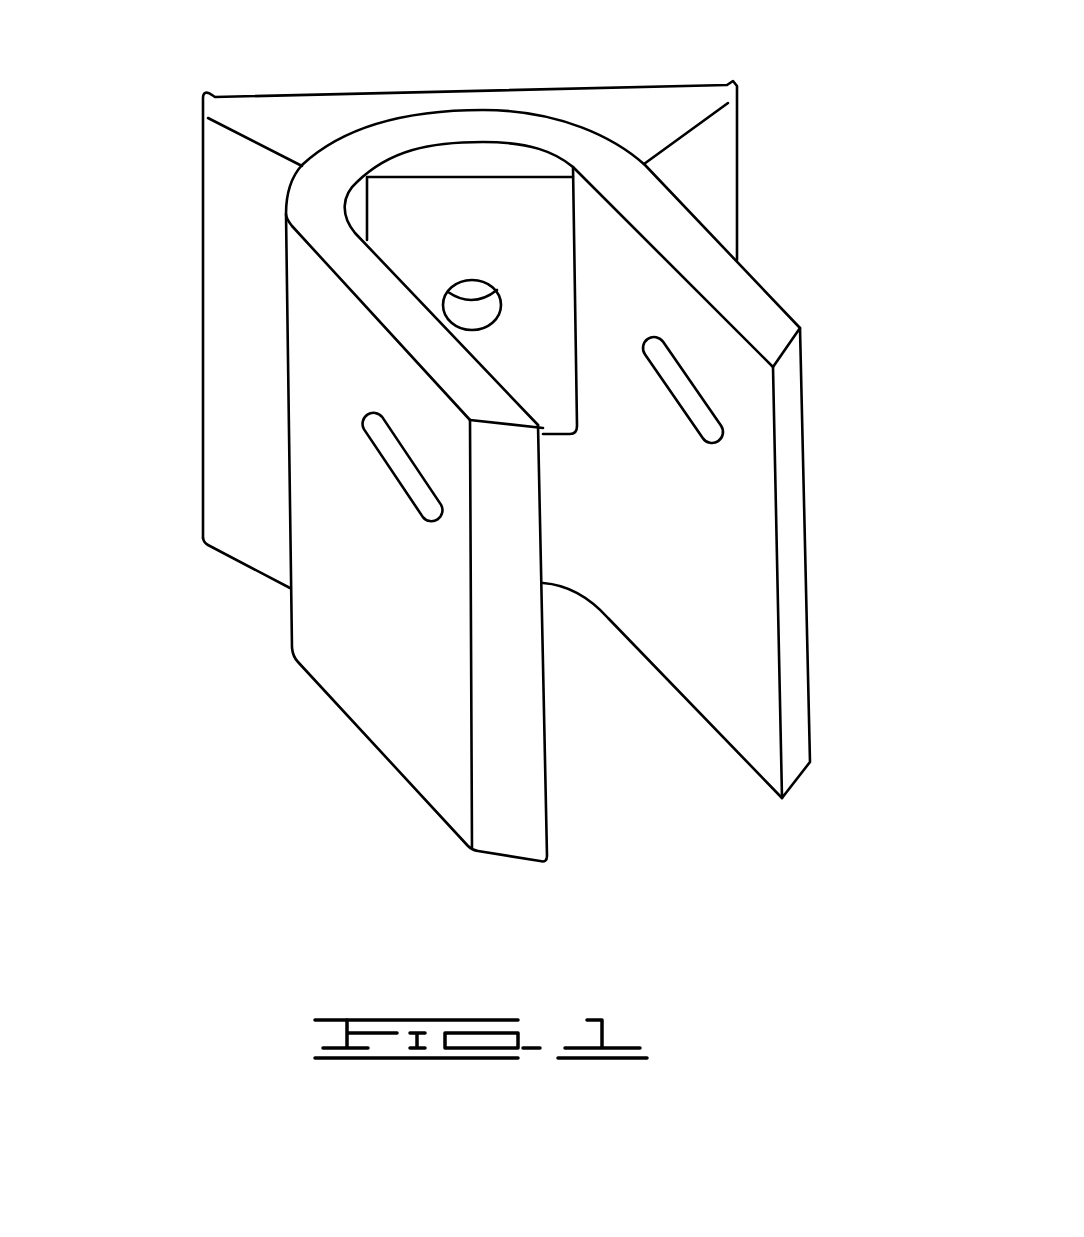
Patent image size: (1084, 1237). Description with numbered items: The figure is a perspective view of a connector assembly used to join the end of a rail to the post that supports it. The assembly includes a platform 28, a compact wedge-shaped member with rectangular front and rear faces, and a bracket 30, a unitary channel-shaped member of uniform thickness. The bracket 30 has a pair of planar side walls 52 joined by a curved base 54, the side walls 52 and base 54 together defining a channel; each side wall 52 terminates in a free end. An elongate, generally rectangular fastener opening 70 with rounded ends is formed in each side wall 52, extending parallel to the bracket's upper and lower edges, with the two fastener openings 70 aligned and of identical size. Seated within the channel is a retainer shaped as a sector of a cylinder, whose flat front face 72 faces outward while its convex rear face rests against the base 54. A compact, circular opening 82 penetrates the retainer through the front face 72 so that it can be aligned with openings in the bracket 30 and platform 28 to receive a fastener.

The platform 28 is at (262, 112).
The base 54 is at (430, 127).
The front face 72 is at (487, 165).
The opening 82 is at (460, 305).
The fastener opening 70 is at (382, 448).
The bracket 30 is at (415, 733).
The side wall 52 is at (731, 693).